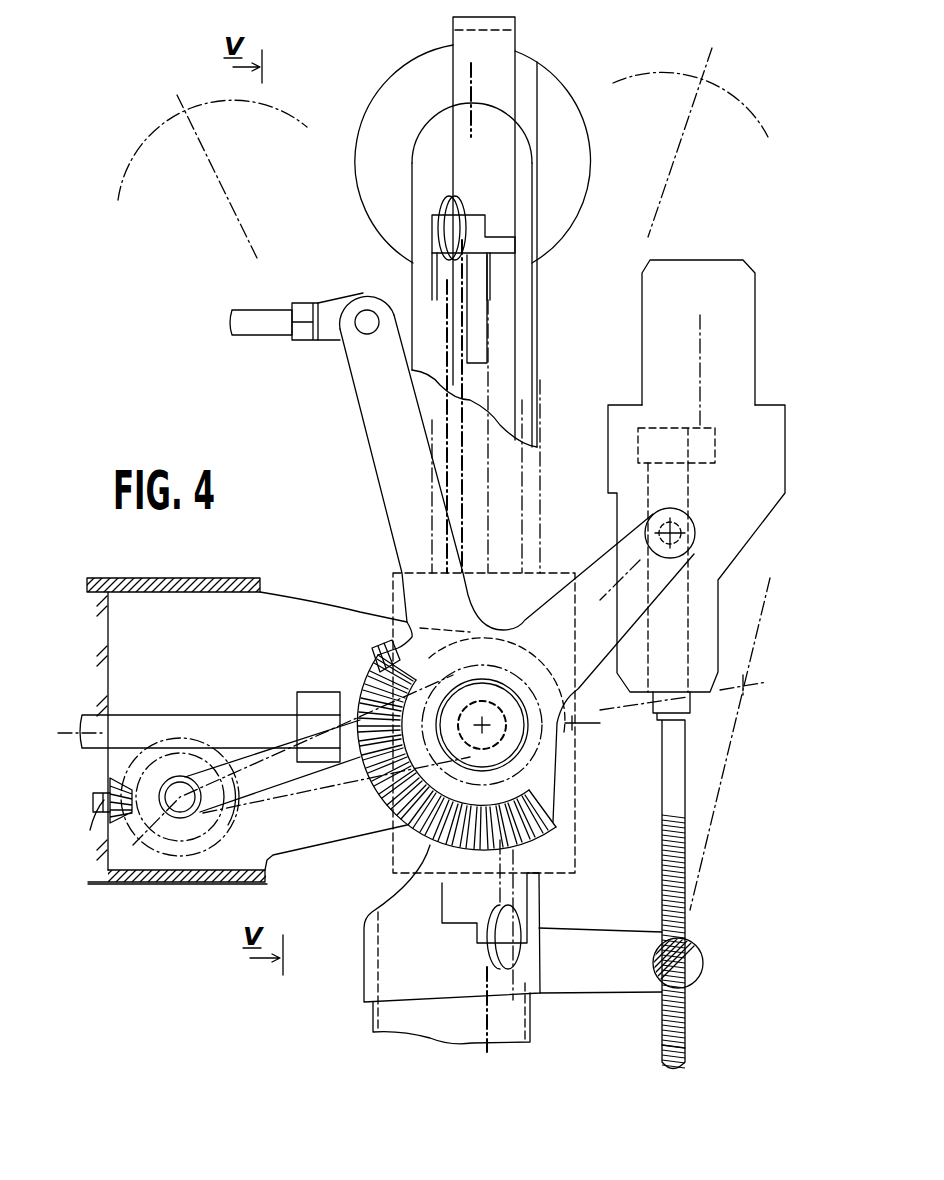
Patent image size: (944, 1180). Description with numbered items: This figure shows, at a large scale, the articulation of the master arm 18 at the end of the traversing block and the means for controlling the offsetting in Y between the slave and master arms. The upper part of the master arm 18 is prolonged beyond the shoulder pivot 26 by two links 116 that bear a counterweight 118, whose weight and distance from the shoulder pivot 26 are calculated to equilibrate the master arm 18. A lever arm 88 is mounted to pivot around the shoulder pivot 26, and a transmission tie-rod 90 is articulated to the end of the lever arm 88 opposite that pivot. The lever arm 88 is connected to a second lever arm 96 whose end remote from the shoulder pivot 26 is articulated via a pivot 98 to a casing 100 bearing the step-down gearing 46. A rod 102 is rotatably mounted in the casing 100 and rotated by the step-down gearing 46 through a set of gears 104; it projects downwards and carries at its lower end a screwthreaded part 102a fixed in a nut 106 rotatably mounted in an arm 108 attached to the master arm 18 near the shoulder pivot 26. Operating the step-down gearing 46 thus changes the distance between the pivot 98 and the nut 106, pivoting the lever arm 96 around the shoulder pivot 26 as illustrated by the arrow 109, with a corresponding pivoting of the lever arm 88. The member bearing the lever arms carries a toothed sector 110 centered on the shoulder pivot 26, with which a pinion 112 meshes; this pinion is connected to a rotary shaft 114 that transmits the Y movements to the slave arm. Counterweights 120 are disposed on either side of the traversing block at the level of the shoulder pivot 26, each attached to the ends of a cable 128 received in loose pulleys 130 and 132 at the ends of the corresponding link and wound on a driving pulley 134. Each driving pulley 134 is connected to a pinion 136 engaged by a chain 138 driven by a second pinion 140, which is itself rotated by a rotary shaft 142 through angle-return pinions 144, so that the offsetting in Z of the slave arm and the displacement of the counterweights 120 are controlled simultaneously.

The master arm 18 is at (360, 1010).
The shoulder pivot 26 is at (490, 728).
The step-down gearing 46 is at (724, 298).
The lever arm 88 is at (372, 403).
The transmission tie-rod 90 is at (256, 330).
The second lever arm 96 is at (592, 570).
The pivot 98 is at (647, 525).
The casing 100 is at (776, 486).
The rod 102 is at (660, 800).
The screwthreaded part 102a is at (660, 1047).
The set of gears 104 is at (690, 437).
The nut 106 is at (660, 953).
The arm 108 is at (567, 943).
The arrow 109 is at (733, 653).
The toothed sector 110 is at (372, 665).
The pinion 112 is at (353, 760).
The rotary shaft 114 is at (190, 712).
The links 116 is at (437, 137).
The counterweight 118 is at (412, 78).
The counterweights 120 is at (660, 800).
The cable 128 is at (453, 537).
The loose pulley 130 is at (495, 948).
The loose pulley 132 is at (448, 198).
The driving pulley 134 is at (483, 703).
The pinion 136 is at (530, 697).
The chain 138 is at (305, 800).
The second pinion 140 is at (217, 807).
The rotary shaft 142 is at (100, 870).
The angle-return pinions 144 is at (133, 825).